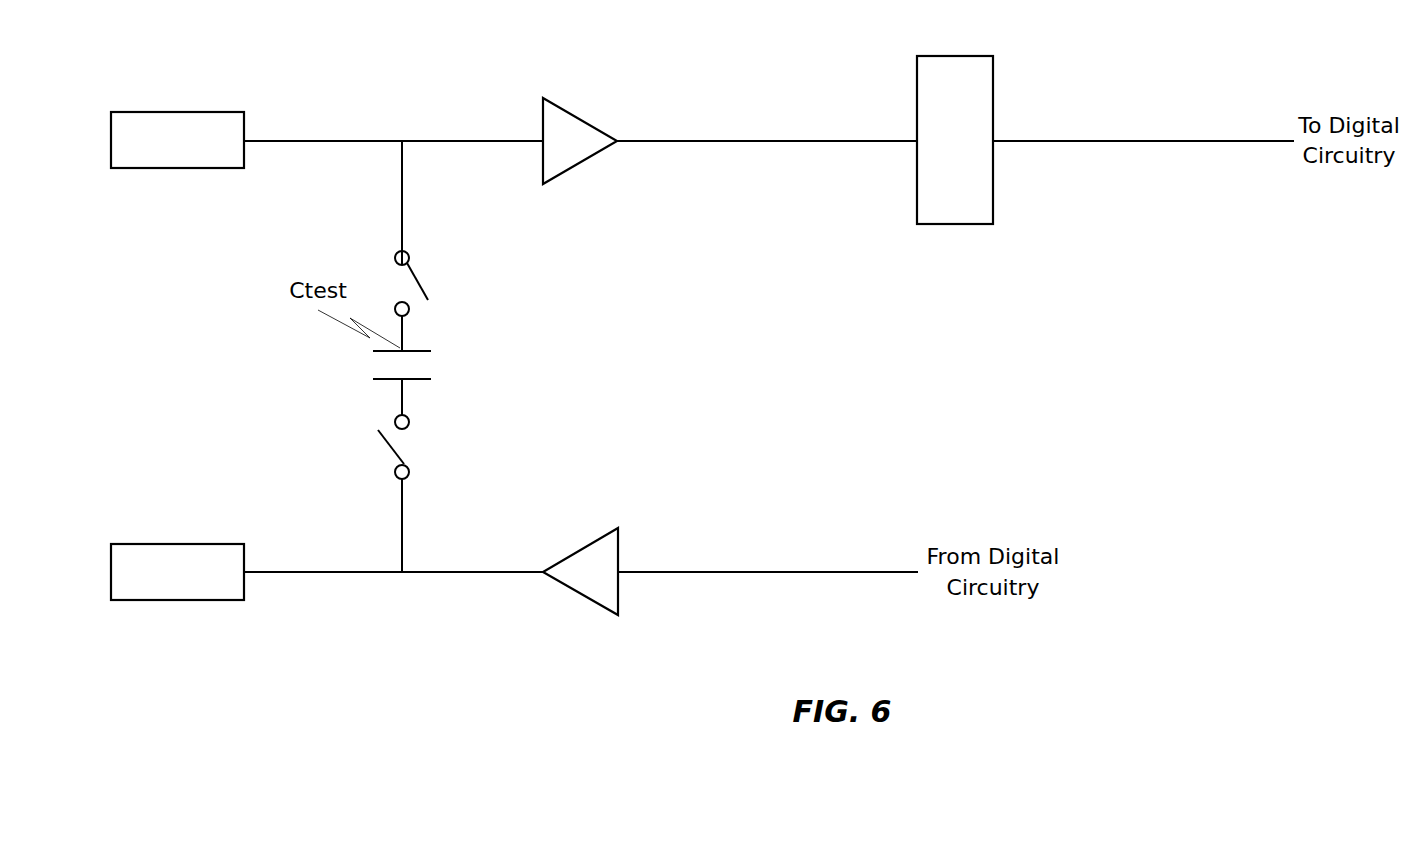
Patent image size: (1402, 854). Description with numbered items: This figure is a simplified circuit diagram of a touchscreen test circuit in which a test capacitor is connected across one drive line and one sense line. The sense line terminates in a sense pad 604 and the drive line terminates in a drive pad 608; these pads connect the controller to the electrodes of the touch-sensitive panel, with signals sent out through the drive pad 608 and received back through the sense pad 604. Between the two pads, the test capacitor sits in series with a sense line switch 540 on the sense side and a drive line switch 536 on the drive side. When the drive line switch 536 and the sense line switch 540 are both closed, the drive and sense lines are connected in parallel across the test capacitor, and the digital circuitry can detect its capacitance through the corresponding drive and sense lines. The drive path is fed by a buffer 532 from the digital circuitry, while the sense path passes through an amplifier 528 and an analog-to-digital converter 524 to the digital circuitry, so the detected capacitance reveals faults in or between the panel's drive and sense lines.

The sense pad 604 is at (177, 109).
The drive pad 608 is at (177, 541).
The amplifier 528 is at (580, 176).
The analog-to-digital converter 524 is at (965, 175).
The sense line switch 540 is at (470, 301).
The drive line switch 536 is at (462, 429).
The buffer 532 is at (606, 541).